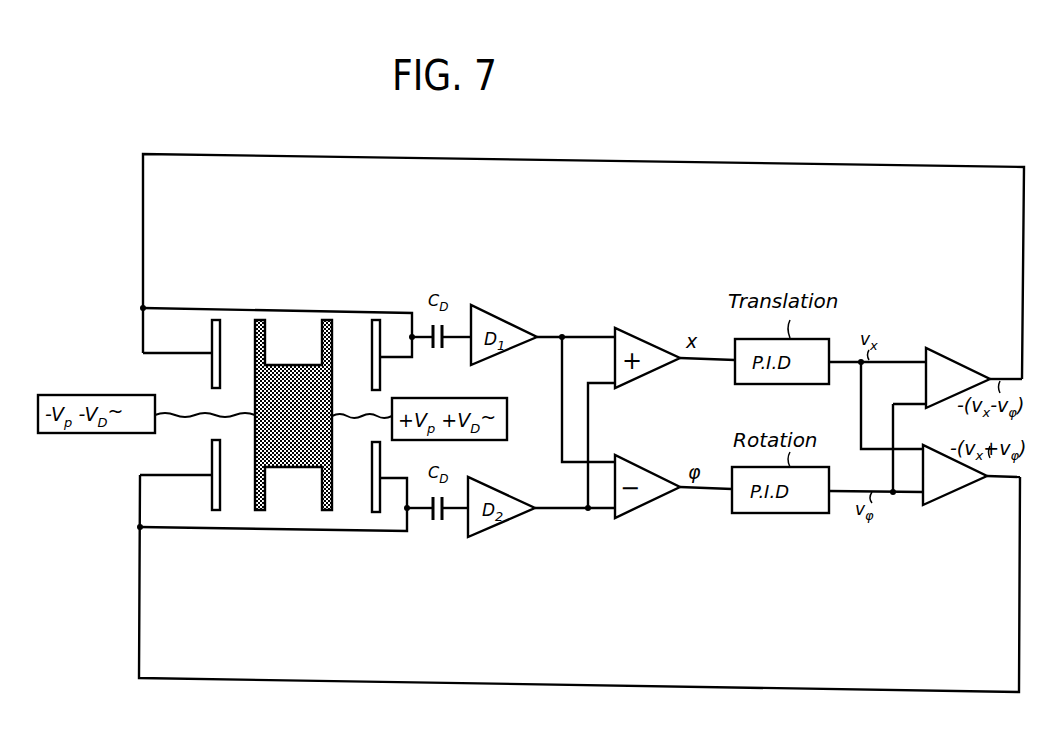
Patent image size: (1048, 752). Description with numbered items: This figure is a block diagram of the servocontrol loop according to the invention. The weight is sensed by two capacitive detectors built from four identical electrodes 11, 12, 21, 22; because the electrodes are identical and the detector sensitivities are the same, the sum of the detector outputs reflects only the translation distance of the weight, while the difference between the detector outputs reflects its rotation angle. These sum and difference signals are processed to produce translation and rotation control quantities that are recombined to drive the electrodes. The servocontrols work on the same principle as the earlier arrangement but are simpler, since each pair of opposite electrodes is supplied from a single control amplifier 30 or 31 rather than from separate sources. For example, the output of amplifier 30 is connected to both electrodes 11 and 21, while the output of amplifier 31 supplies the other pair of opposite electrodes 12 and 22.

The control amplifier 30 is at (954, 360).
The control amplifier 31 is at (936, 496).
The electrode 11 is at (231, 354).
The electrode 12 is at (231, 475).
The electrode 21 is at (359, 355).
The electrode 22 is at (359, 477).